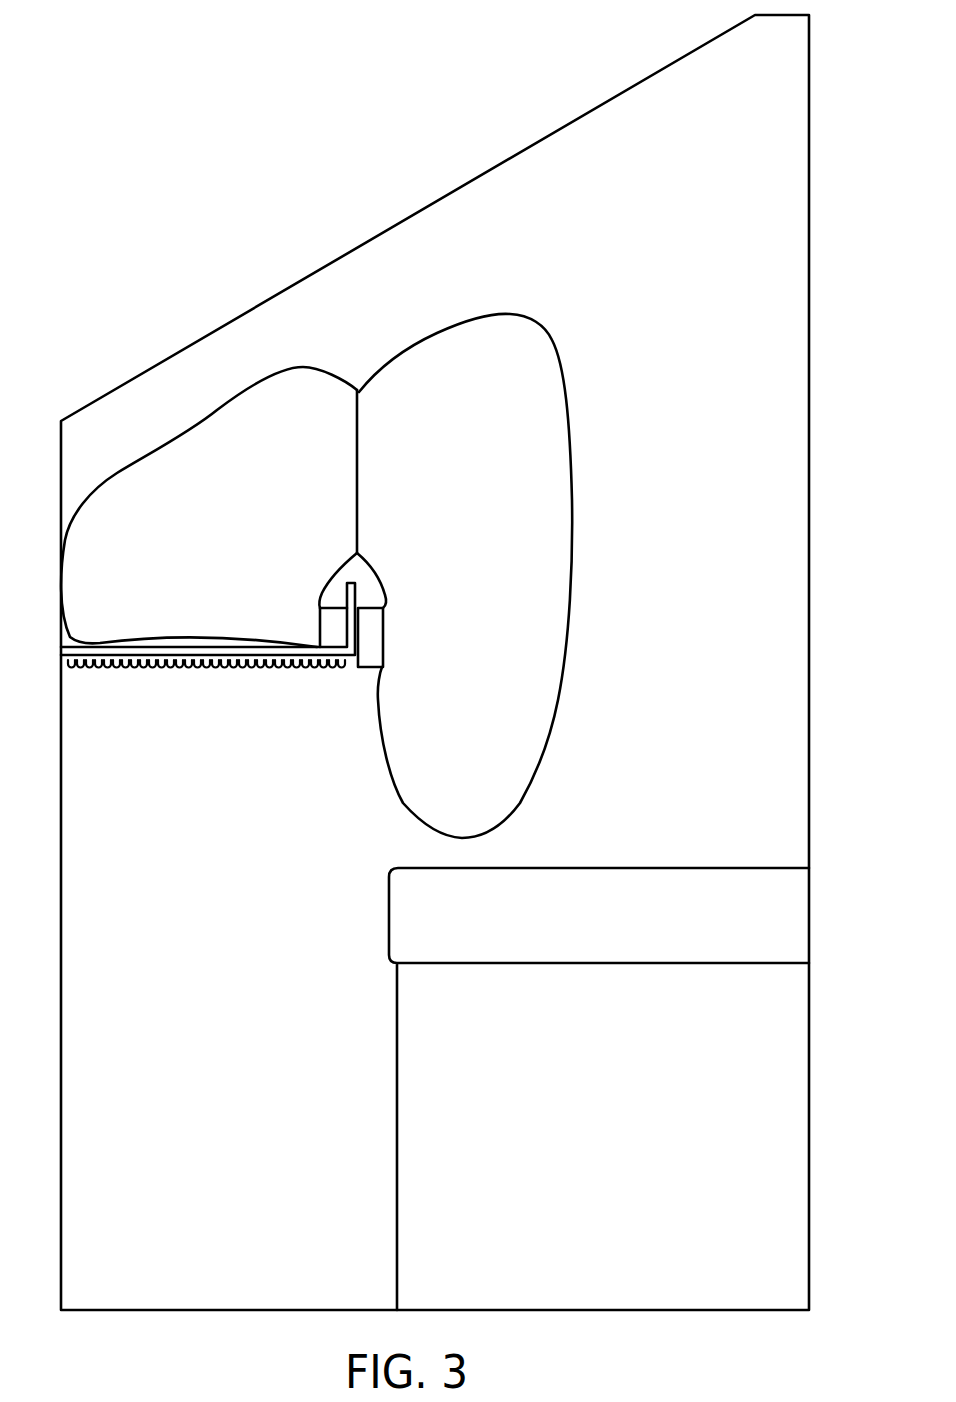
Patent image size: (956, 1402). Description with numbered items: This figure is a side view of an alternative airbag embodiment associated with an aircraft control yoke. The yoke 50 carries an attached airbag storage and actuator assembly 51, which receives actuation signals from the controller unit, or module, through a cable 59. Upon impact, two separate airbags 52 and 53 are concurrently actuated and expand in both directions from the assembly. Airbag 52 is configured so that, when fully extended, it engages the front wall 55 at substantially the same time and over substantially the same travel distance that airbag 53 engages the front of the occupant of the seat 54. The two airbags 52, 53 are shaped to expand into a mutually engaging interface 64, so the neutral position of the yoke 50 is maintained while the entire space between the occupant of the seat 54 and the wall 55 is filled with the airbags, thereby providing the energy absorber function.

The yoke 50 is at (235, 668).
The airbag storage and actuator assembly 51 is at (360, 681).
The airbag 52 is at (310, 367).
The airbag 53 is at (437, 333).
The seat 54 is at (688, 873).
The front wall 55 is at (61, 866).
The cable 59 is at (145, 668).
The mutually engaging interface 64 is at (359, 369).